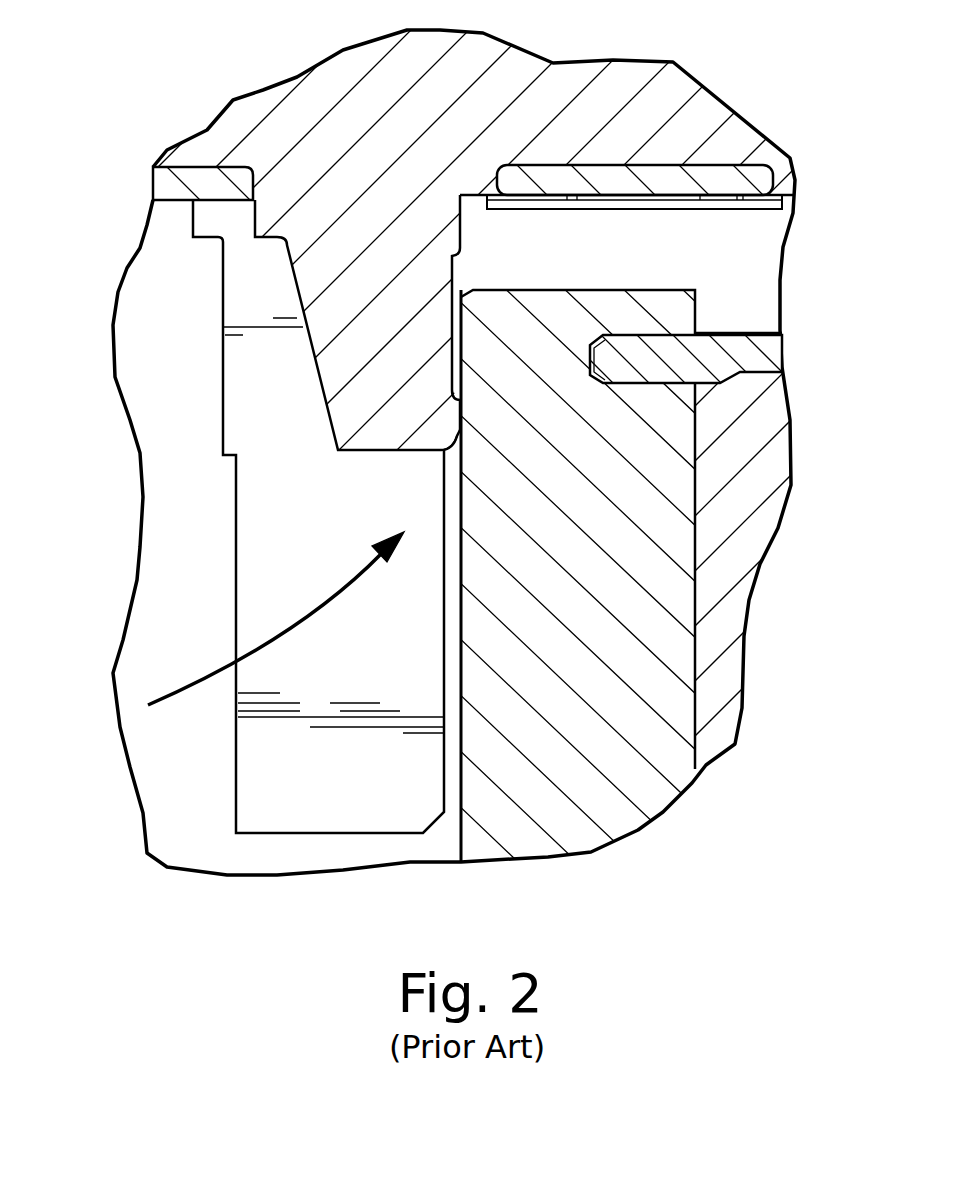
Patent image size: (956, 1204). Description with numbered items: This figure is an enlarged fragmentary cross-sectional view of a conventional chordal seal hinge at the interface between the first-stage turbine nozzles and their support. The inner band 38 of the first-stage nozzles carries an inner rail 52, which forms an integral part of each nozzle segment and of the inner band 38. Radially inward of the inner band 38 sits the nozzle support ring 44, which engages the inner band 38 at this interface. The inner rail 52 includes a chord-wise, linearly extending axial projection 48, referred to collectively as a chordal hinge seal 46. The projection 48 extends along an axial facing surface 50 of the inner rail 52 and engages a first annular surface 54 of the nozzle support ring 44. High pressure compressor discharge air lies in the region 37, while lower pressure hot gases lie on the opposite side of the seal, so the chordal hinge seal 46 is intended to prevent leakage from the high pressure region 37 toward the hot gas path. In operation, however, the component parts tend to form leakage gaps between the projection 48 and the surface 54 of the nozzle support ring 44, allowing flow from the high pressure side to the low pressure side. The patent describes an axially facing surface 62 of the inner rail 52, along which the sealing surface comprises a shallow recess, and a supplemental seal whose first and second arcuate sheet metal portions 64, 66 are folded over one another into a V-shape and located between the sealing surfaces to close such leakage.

The high pressure region 37 is at (172, 618).
The inner band 38 is at (431, 240).
The nozzle support ring 44 is at (607, 582).
The chordal hinge seal 46 is at (233, 516).
The axial projection 48 is at (457, 417).
The axial facing surface 50 is at (473, 262).
The inner rail 52 is at (327, 263).
The first annular surface 54 is at (458, 599).
The axially facing surface of the inner rail 62 is at (656, 229).
The first arcuate sheet metal portion 64 is at (685, 290).
The second arcuate sheet metal portion 66 is at (700, 207).